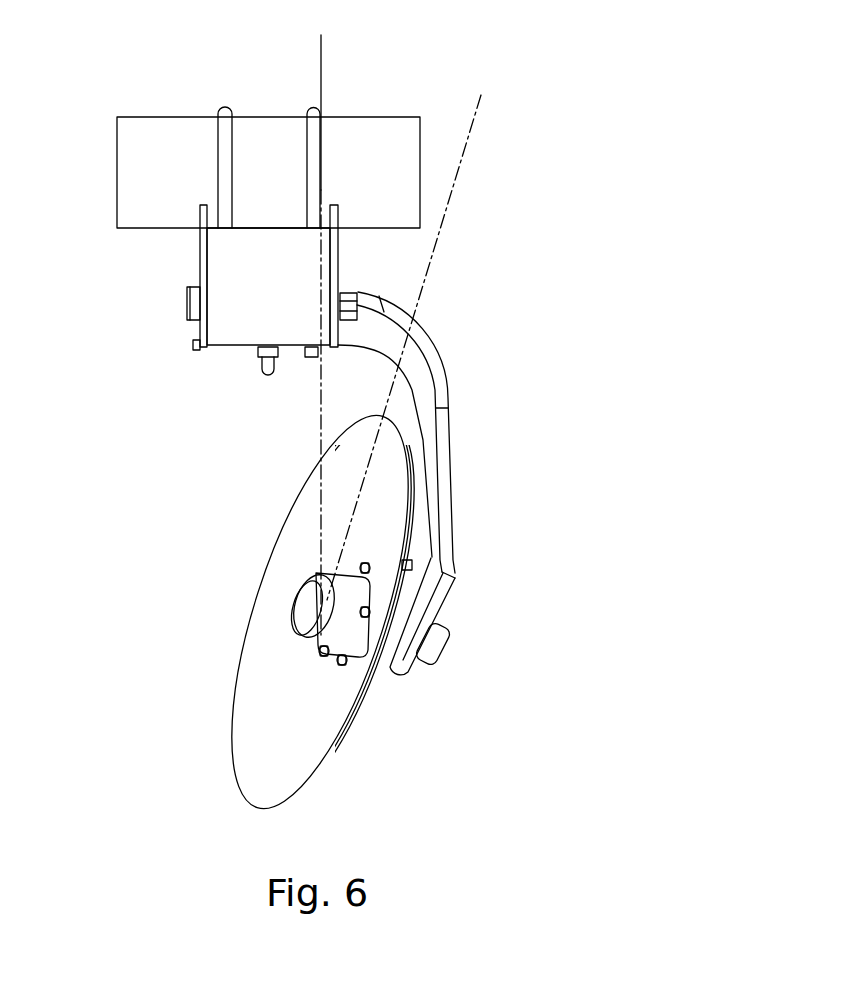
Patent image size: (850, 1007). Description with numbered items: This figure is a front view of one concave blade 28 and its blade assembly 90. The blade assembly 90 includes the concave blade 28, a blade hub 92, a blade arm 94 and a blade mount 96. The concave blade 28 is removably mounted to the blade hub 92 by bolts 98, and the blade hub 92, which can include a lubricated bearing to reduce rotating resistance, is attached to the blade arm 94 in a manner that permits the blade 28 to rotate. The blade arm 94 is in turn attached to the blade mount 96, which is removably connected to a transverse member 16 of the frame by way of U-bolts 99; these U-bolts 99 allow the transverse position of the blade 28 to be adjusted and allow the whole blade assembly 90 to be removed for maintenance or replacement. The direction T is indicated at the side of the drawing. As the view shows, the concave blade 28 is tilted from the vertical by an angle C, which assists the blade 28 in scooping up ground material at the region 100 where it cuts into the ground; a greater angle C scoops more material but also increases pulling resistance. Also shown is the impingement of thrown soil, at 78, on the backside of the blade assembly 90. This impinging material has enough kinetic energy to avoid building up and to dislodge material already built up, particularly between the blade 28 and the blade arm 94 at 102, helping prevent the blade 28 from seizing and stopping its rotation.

The transverse member 16 is at (117, 177).
The U-bolts 99 is at (243, 134).
The blade mount 96 is at (236, 299).
The blade arm 94 is at (449, 428).
The region between blade and blade arm 102 is at (422, 545).
The blade assembly 90 is at (456, 668).
The impingement of thrown soil 78 is at (462, 581).
The region where blade cuts into the ground 100 is at (256, 760).
The concave blade 28 is at (283, 787).
The blade hub 92 is at (318, 588).
The bolts 98 is at (346, 668).
The vertical tilt angle C is at (480, 101).
The transverse direction T is at (823, 209).